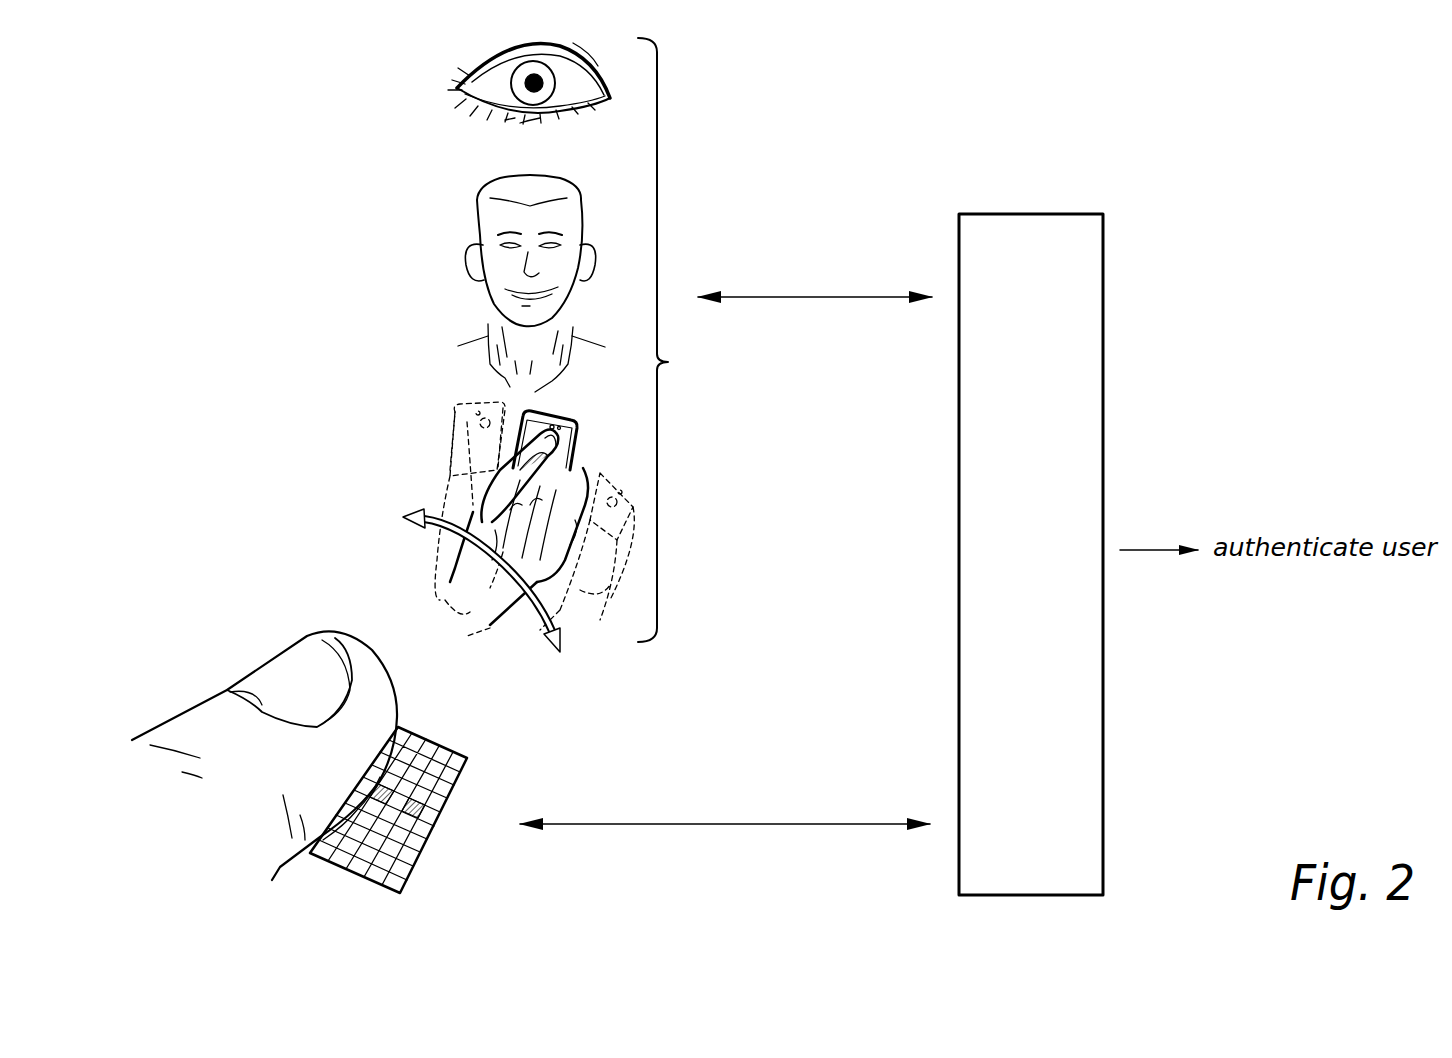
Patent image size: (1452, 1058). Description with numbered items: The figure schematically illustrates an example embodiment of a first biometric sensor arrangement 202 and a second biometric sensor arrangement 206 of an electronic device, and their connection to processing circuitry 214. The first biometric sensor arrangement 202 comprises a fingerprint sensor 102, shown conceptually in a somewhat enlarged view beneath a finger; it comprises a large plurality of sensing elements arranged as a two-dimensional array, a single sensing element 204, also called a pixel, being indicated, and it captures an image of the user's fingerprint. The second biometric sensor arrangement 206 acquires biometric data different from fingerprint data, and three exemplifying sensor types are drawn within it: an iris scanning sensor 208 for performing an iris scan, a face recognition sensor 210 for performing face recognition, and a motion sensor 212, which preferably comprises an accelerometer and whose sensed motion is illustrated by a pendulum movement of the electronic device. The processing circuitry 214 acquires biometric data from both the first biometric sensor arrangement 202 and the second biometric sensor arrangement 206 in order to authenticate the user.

The fingerprint sensor 102 is at (436, 802).
The first biometric sensor arrangement 202 is at (347, 770).
The sensing element 204 is at (410, 798).
The second biometric sensor arrangement 206 is at (657, 160).
The iris scanning sensor 208 is at (424, 87).
The face recognition sensor 210 is at (432, 254).
The motion sensor 212 is at (402, 491).
The processing circuitry 214 is at (1030, 214).